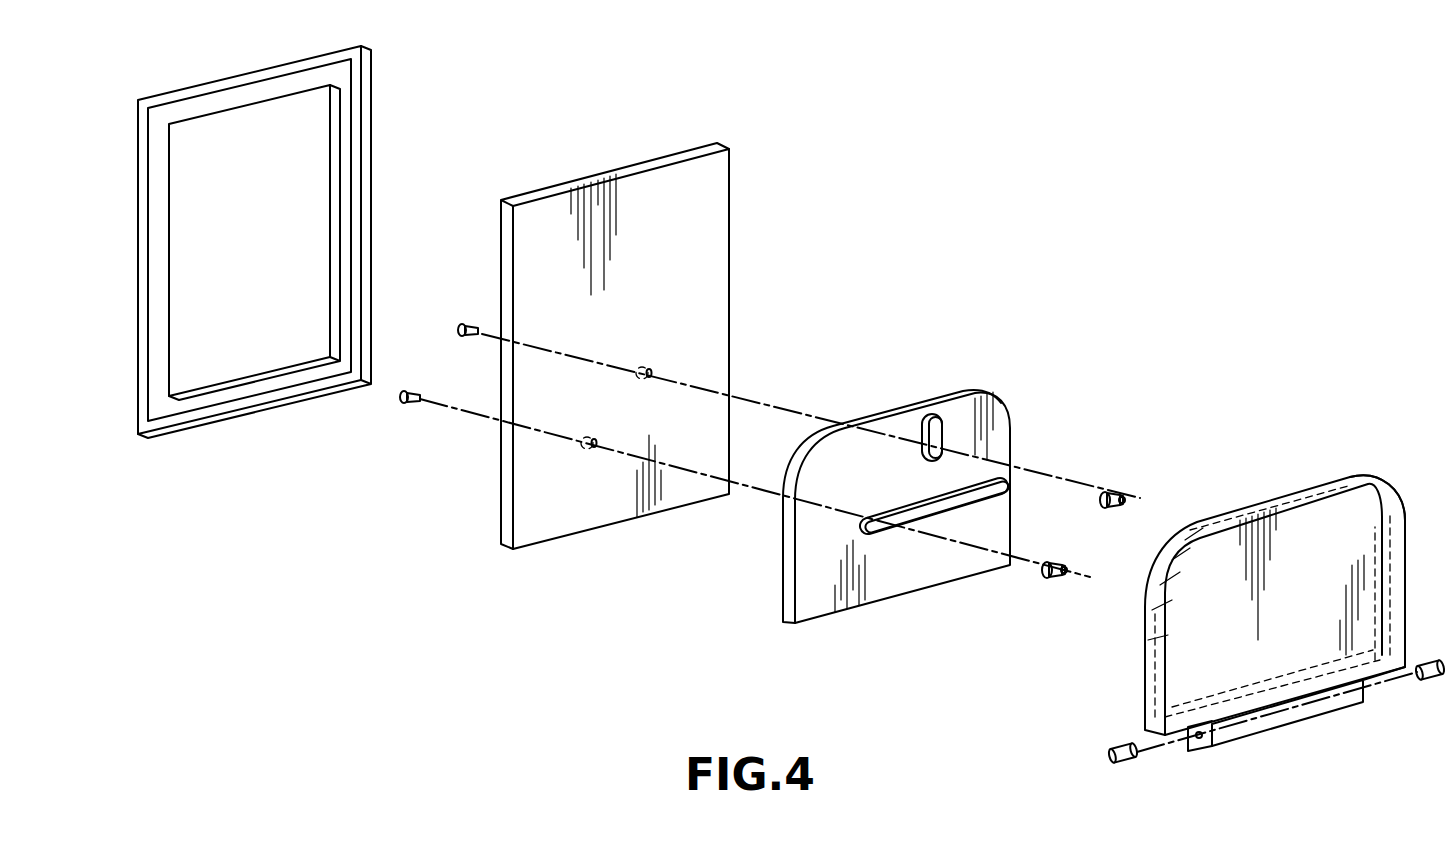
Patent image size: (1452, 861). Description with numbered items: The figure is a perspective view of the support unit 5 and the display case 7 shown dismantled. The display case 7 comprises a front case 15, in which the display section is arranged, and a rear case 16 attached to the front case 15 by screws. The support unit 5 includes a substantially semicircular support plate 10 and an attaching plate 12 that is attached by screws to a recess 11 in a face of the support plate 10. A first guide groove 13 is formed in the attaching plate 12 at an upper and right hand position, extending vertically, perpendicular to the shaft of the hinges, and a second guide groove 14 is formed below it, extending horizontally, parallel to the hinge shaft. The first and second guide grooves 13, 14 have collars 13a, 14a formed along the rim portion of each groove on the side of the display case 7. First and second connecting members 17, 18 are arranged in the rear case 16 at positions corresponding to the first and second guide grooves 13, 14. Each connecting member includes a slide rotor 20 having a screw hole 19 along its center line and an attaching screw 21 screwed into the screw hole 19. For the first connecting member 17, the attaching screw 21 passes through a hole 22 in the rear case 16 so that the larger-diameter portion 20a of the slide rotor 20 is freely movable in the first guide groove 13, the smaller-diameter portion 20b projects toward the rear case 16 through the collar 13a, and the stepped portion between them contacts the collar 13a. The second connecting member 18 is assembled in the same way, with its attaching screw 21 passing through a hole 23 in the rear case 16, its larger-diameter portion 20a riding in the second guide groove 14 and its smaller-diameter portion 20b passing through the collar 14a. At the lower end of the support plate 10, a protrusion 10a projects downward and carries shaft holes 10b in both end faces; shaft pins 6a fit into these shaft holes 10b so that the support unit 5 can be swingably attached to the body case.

The support unit 5 is at (1334, 388).
The shaft pins 6a is at (1430, 658).
The display case 7 is at (534, 86).
The support plate 10 is at (1305, 487).
The protrusion 10a is at (1320, 706).
The shaft holes 10b is at (1200, 742).
The recess 11 is at (1383, 512).
The attaching plate 12 is at (1010, 420).
The first guide groove 13 is at (945, 432).
The collar 13a is at (922, 430).
The second guide groove 14 is at (965, 508).
The collar 14a is at (900, 532).
The front case 15 is at (362, 116).
The rear case 16 is at (533, 187).
The first connecting member 17 is at (777, 398).
The second connecting member 18 is at (748, 497).
The screw hole 19 is at (1125, 497).
The slide rotor 20 is at (1240, 425).
The larger-diameter portion 20a is at (1116, 494).
The smaller-diameter portion 20b is at (1100, 493).
The attaching screw 21 is at (472, 322).
The hole 22 is at (646, 365).
The hole 23 is at (590, 436).